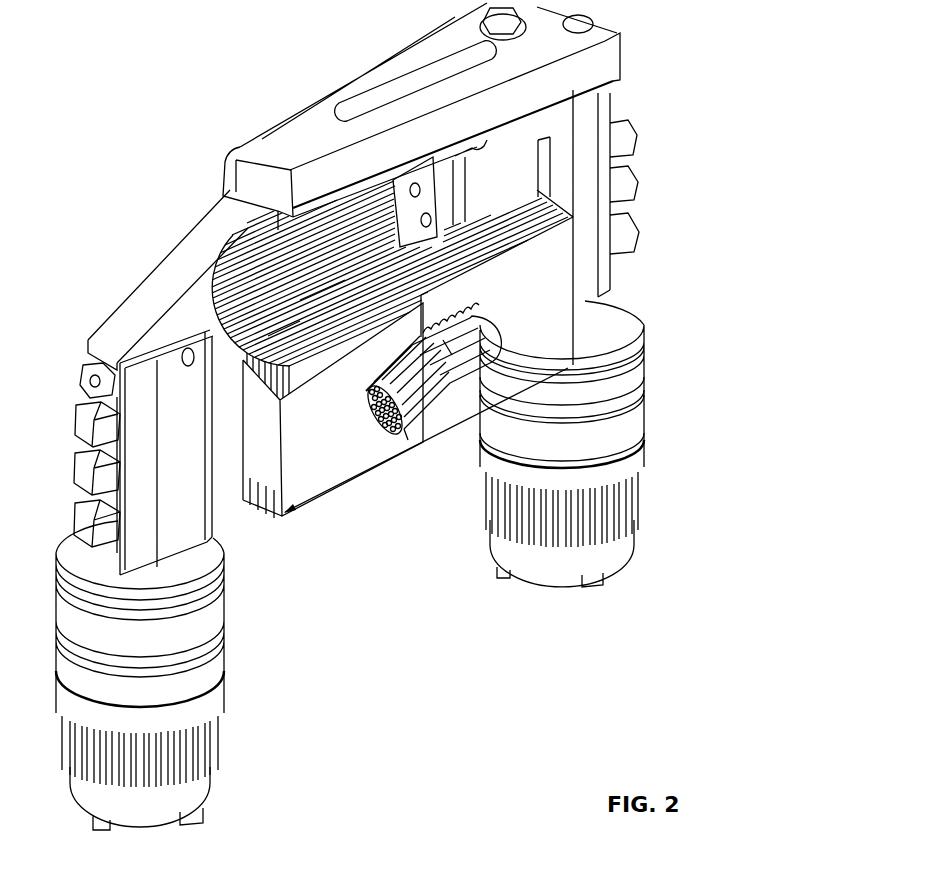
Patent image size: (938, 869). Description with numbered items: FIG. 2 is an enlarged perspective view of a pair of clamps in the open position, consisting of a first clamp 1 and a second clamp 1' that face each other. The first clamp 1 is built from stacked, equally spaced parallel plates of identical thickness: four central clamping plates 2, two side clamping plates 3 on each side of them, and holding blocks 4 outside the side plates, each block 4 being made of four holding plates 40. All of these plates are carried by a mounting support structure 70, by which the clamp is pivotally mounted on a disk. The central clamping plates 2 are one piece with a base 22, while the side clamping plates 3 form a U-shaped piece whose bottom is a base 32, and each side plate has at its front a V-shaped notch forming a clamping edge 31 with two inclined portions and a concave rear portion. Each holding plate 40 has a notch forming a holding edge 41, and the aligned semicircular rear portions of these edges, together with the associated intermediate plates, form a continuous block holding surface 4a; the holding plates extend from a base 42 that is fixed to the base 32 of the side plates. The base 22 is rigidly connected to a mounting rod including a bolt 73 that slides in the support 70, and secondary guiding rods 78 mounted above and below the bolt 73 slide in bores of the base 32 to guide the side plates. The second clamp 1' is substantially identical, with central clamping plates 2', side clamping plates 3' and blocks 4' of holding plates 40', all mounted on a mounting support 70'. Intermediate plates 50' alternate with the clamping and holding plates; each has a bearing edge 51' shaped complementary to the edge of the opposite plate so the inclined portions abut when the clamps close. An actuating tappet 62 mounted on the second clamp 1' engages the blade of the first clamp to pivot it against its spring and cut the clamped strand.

The first clamp 1 is at (545, 227).
The second clamp 1' is at (342, 470).
The central clamping plates 2 is at (308, 189).
The central clamping plates 2' is at (262, 217).
The side clamping plates 3 is at (430, 136).
The side clamping plates 3' is at (239, 227).
The holding blocks 4 is at (578, 384).
The holding blocks 4' is at (418, 463).
The block holding surface 4a is at (568, 368).
The base of the central clamping plates 22 is at (240, 316).
The clamping edge 31 is at (441, 366).
The base of the side clamping plates 32 is at (233, 357).
The holding plates 40 is at (586, 475).
The holding plates 40' is at (333, 448).
The holding edge 41 is at (438, 412).
The base of the holding block 42 is at (258, 494).
The intermediate plates 50' is at (367, 461).
The bearing edge 51' is at (383, 446).
The actuating tappet 62 is at (120, 317).
The mounting support structure 70 is at (641, 148).
The mounting support 70' is at (68, 455).
The bolt 73 is at (634, 193).
The secondary guiding rods 78 is at (635, 240).